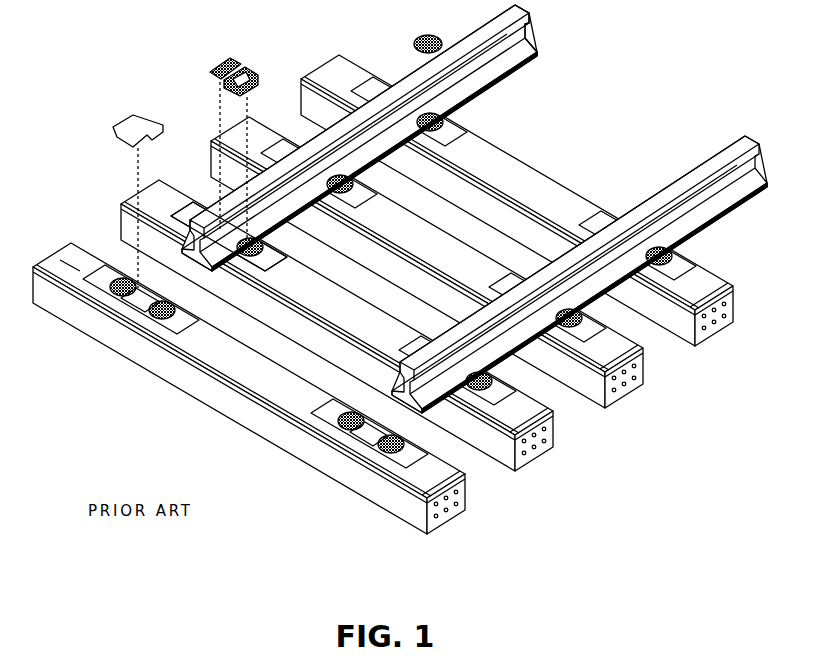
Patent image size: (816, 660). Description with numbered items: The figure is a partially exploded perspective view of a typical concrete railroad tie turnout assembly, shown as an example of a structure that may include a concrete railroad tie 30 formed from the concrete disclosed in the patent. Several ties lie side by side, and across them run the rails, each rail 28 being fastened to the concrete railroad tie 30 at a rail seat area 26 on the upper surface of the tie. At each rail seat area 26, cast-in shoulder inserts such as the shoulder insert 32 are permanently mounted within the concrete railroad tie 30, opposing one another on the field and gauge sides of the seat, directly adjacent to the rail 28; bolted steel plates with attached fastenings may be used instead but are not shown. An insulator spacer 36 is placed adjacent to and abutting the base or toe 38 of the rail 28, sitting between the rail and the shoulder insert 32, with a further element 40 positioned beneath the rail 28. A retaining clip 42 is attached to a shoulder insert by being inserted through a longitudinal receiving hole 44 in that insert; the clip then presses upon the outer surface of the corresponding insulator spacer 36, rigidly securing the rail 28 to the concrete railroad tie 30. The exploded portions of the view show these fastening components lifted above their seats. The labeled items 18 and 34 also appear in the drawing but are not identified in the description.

The rail end 18 is at (539, 33).
The rail seat area 26 is at (108, 316).
The rail 28 is at (712, 166).
The concrete railroad tie 30 is at (55, 245).
The cast-in shoulder insert 32 is at (178, 307).
The rail clip 34 is at (122, 282).
The insulator spacer 36 is at (247, 66).
The base or toe of the rail 38 is at (480, 33).
The element beneath the rail 40 is at (136, 116).
The retaining clip 42 is at (420, 38).
The longitudinal receiving hole 44 is at (313, 221).